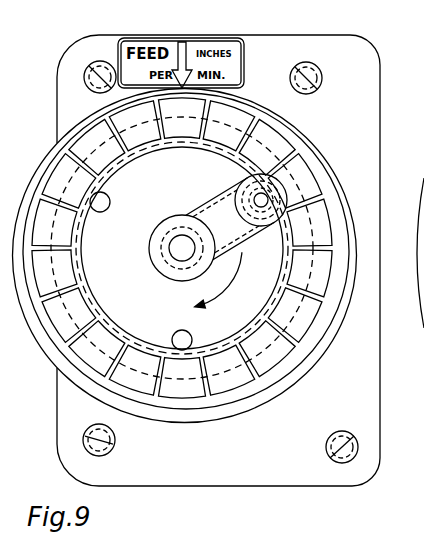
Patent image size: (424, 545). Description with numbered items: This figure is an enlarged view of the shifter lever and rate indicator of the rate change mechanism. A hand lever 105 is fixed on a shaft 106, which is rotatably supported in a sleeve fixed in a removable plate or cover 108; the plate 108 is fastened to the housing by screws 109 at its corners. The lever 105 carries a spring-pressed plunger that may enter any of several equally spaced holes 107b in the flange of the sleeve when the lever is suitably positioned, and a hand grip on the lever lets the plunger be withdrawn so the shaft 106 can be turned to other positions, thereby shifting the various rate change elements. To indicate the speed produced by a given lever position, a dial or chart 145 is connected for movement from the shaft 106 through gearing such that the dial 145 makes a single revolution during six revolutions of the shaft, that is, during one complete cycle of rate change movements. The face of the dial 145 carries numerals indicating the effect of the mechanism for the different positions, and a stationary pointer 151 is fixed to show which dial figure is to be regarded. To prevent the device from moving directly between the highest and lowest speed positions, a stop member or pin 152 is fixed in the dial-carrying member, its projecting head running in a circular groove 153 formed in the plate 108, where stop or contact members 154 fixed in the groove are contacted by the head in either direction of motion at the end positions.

The hand lever 105 is at (213, 204).
The shaft 106 is at (178, 258).
The holes 107b is at (108, 198).
The removable plate or cover 108 is at (372, 138).
The screws 109 is at (84, 78).
The dial or chart 145 is at (57, 342).
The stationary pointer 151 is at (178, 42).
The stop member or pin 152 is at (180, 393).
The circular groove 153 is at (241, 372).
The stop or contact member 154 is at (290, 346).